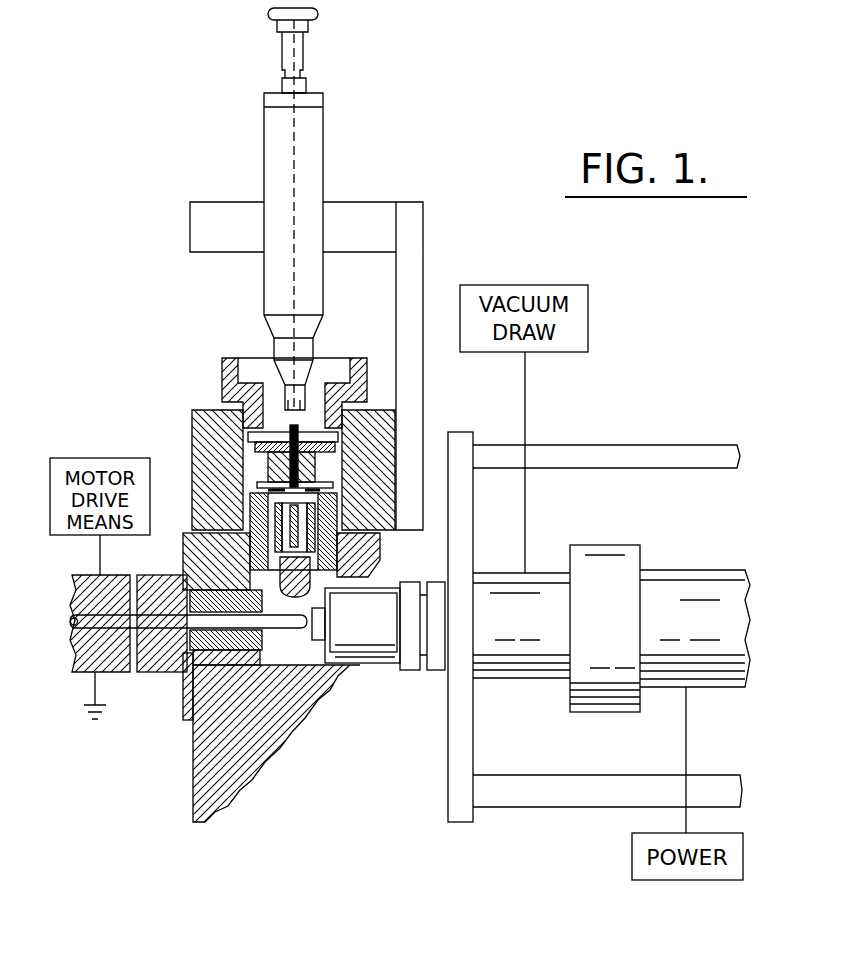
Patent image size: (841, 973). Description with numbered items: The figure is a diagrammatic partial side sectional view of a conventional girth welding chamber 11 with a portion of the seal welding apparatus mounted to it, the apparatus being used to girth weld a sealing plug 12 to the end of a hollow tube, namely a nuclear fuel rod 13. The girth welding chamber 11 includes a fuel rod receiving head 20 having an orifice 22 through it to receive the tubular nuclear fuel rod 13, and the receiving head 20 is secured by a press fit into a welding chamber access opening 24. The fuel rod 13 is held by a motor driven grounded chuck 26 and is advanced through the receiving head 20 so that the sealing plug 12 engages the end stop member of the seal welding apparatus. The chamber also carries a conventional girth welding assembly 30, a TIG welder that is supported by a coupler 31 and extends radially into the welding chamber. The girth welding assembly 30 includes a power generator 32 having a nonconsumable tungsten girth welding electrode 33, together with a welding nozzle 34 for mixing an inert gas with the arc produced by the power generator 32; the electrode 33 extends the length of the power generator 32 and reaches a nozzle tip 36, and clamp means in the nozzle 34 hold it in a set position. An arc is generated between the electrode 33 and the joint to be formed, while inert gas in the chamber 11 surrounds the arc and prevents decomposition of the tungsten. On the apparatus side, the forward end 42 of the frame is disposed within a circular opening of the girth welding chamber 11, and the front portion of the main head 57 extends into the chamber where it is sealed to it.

The girth welding chamber 11 is at (427, 262).
The sealing plug 12 is at (307, 637).
The nuclear fuel rod 13 is at (72, 630).
The fuel rod receiving head 20 is at (165, 583).
The orifice 22 is at (130, 662).
The welding chamber access opening 24 is at (183, 700).
The motor driven grounded chuck 26 is at (90, 663).
The girth welding assembly 30 is at (172, 292).
The coupler 31 is at (192, 420).
The power generator 32 is at (310, 143).
The tungsten girth welding electrode 33 is at (295, 423).
The welding nozzle 34 is at (320, 535).
The nozzle tip 36 is at (322, 592).
The forward end 42 is at (447, 780).
The main head 57 is at (368, 650).